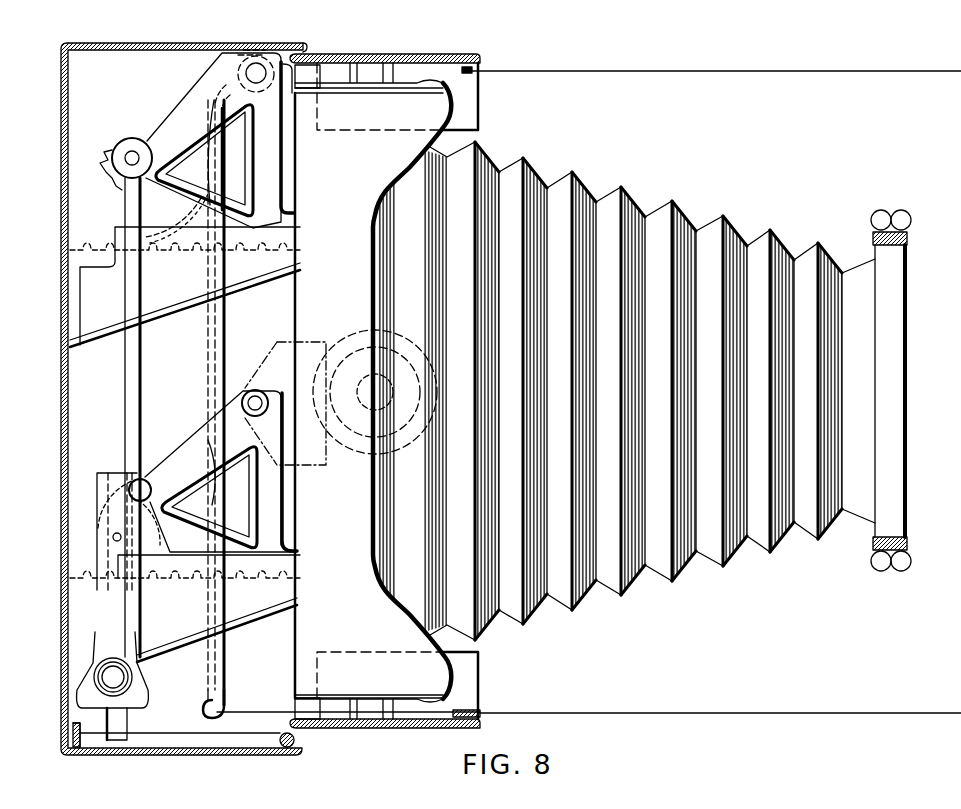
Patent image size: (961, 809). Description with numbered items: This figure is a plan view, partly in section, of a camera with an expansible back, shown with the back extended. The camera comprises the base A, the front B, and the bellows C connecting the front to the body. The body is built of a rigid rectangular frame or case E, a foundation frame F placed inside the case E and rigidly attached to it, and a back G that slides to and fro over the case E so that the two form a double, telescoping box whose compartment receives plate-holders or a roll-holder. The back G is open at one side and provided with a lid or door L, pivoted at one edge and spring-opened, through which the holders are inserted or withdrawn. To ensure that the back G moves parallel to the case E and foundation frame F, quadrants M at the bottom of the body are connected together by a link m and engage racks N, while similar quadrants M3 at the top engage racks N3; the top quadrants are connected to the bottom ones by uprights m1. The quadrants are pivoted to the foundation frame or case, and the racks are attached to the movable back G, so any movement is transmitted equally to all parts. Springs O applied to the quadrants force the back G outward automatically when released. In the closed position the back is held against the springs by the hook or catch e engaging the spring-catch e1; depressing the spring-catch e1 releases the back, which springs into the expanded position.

The base A is at (707, 392).
The front B is at (891, 390).
The bellows C is at (624, 391).
The rigid frame or case E is at (385, 378).
The foundation frame F is at (361, 391).
The back G is at (172, 399).
The lid or door L is at (122, 745).
The quadrant M is at (197, 148).
The quadrant M3 is at (197, 471).
The rack N is at (185, 278).
The rack N3 is at (185, 567).
The springs O is at (206, 402).
The uprights m1 is at (256, 70).
The link m is at (144, 417).
The hook or catch e is at (341, 704).
The spring-catch e1 is at (113, 670).